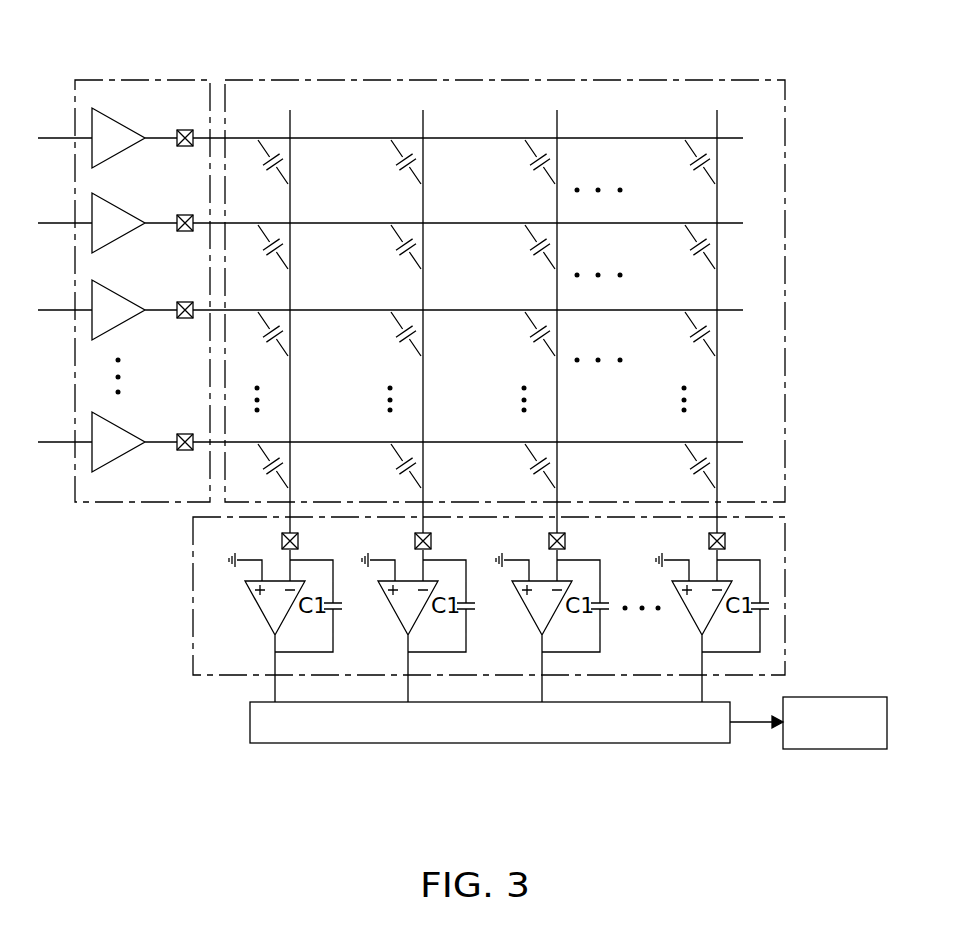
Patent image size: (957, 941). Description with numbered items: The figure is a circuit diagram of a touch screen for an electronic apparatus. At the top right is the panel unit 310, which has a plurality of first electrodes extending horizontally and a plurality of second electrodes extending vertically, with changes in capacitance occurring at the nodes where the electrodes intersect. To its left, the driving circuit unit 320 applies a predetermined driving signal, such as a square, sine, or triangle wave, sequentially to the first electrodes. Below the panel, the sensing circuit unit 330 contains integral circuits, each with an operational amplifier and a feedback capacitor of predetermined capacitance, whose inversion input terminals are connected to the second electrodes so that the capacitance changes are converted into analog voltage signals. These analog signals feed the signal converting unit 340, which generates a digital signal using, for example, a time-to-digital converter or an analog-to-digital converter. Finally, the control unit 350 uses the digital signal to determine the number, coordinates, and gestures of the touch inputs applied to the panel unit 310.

The panel unit 310 is at (525, 80).
The driving circuit unit 320 is at (142, 80).
The sensing circuit unit 330 is at (193, 597).
The signal converting unit 340 is at (490, 745).
The control unit 350 is at (832, 752).